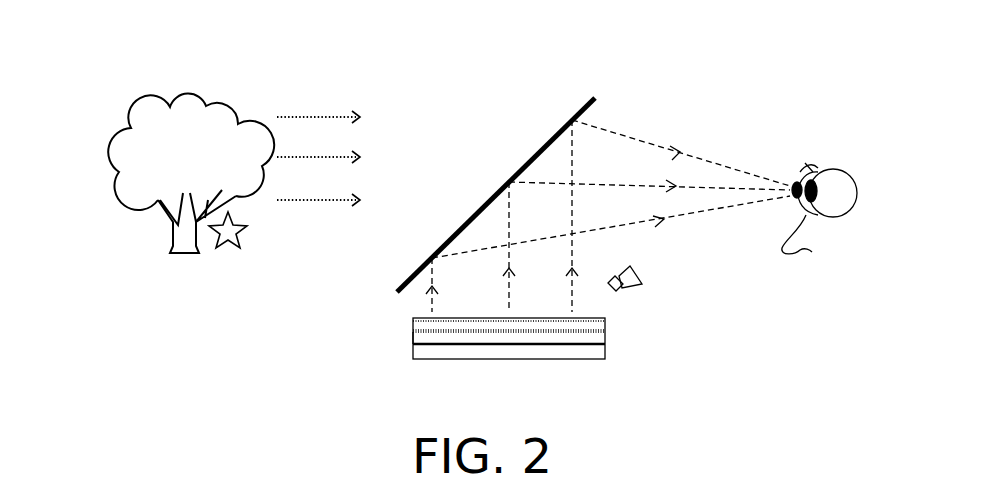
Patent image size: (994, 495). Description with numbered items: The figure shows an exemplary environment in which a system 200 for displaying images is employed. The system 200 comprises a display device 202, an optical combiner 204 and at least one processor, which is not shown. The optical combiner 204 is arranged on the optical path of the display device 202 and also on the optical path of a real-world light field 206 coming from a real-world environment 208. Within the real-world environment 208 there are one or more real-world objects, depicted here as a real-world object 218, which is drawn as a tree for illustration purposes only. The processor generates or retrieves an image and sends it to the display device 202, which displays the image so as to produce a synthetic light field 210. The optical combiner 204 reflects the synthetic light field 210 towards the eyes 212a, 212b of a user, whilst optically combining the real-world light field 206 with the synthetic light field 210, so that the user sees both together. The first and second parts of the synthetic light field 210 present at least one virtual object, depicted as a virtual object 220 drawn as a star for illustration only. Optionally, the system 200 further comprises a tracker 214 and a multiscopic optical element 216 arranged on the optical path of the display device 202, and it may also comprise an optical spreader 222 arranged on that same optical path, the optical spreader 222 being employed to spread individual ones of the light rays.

The system for displaying images 200 is at (412, 94).
The display device 202 is at (511, 347).
The optical combiner 204 is at (496, 195).
The real-world light field 206 is at (339, 192).
The real-world environment 208 is at (181, 113).
The synthetic light field 210 is at (608, 190).
The eye 212a is at (836, 226).
The eye 212b is at (811, 155).
The tracker 214 is at (673, 284).
The multiscopic optical element 216 is at (564, 326).
The real-world object 218 is at (160, 229).
The virtual object 220 is at (223, 273).
The optical spreader 222 is at (360, 350).